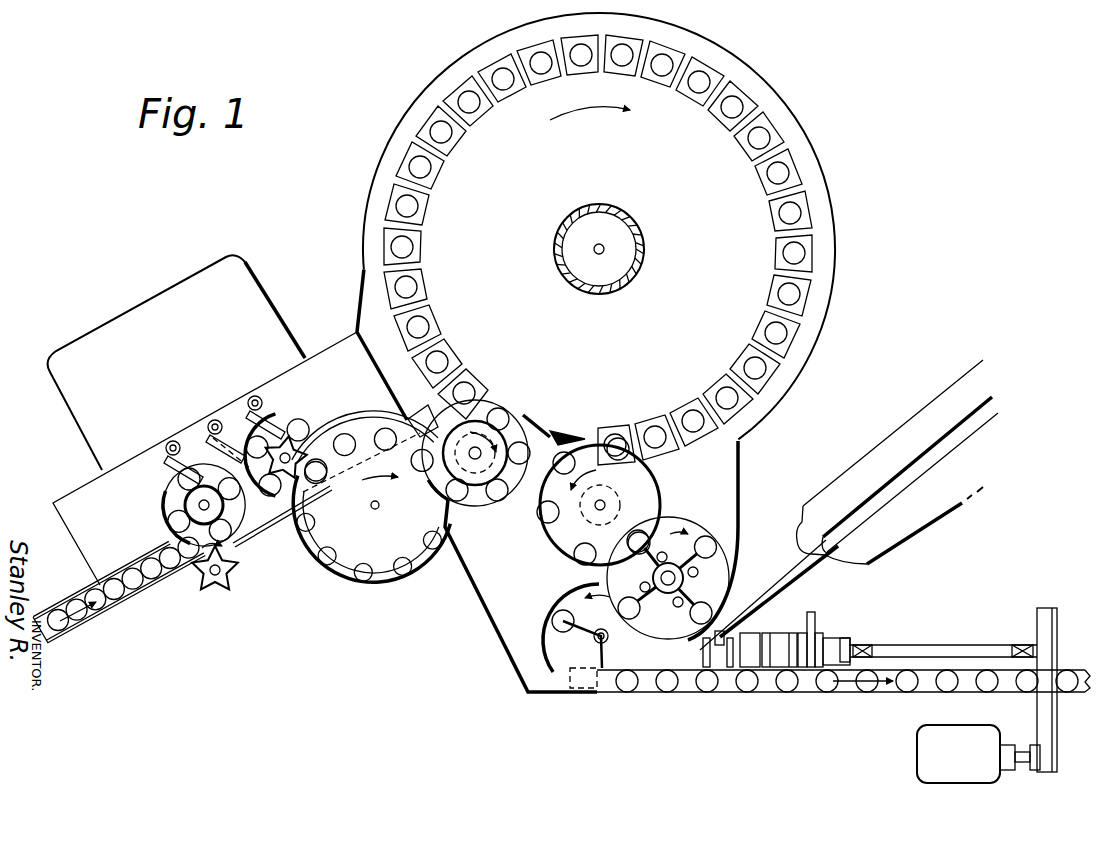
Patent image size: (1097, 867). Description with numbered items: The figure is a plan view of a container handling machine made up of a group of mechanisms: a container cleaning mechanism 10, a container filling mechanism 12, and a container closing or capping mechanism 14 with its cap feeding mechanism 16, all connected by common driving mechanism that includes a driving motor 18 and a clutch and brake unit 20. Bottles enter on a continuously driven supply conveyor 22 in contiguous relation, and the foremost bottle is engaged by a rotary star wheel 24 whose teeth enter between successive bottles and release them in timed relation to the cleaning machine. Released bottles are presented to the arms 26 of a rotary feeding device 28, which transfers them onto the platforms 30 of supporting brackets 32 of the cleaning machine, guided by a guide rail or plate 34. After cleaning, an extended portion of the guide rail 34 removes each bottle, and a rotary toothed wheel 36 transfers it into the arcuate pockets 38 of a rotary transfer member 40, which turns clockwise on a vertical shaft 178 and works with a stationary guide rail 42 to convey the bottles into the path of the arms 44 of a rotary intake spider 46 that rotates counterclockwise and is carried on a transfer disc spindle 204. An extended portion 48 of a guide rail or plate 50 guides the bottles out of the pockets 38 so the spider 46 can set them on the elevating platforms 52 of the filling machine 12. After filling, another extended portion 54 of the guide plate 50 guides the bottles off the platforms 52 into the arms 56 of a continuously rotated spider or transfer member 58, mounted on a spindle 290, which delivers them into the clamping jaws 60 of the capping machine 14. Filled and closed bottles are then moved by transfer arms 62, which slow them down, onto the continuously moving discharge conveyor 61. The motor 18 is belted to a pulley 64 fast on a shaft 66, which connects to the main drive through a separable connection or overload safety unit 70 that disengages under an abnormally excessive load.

The container cleaning mechanism 10 is at (103, 300).
The container filling mechanism 12 is at (418, 68).
The container closing or capping mechanism 14 is at (750, 484).
The cap feeding mechanism 16 is at (922, 394).
The driving motor 18 is at (925, 753).
The clutch and brake unit 20 is at (778, 650).
The supply conveyor 22 is at (83, 630).
The rotary star wheel 24 is at (220, 597).
The arms 26 is at (182, 523).
The rotary feeding device 28 is at (142, 510).
The platforms 30 is at (270, 428).
The supporting brackets 32 is at (255, 396).
The guide rail or plate 34 is at (260, 526).
The rotary toothed wheel 36 is at (288, 443).
The arcuate pockets or cutouts 38 is at (367, 575).
The rotary transfer member 40 is at (388, 565).
The stationary guide rail 42 is at (353, 420).
The arms 44 is at (532, 426).
The rotary intake spider 46 is at (427, 400).
The extended portion 48 is at (423, 515).
The guide rail or plate 50 is at (490, 615).
The elevating platforms 52 is at (383, 230).
The extended portion 54 is at (562, 436).
The arms 56 is at (647, 465).
The spider or transfer member 58 is at (638, 495).
The clamping jaws 60 is at (657, 530).
The discharge conveyor 61 is at (763, 687).
The transfer arms 62 is at (597, 648).
The pulley 64 is at (1037, 612).
The shaft 66 is at (950, 647).
The separable connection or overload safety unit 70 is at (820, 623).
The vertical shaft 178 is at (375, 509).
The transfer disc spindle 204 is at (477, 460).
The spindle 290 is at (597, 508).